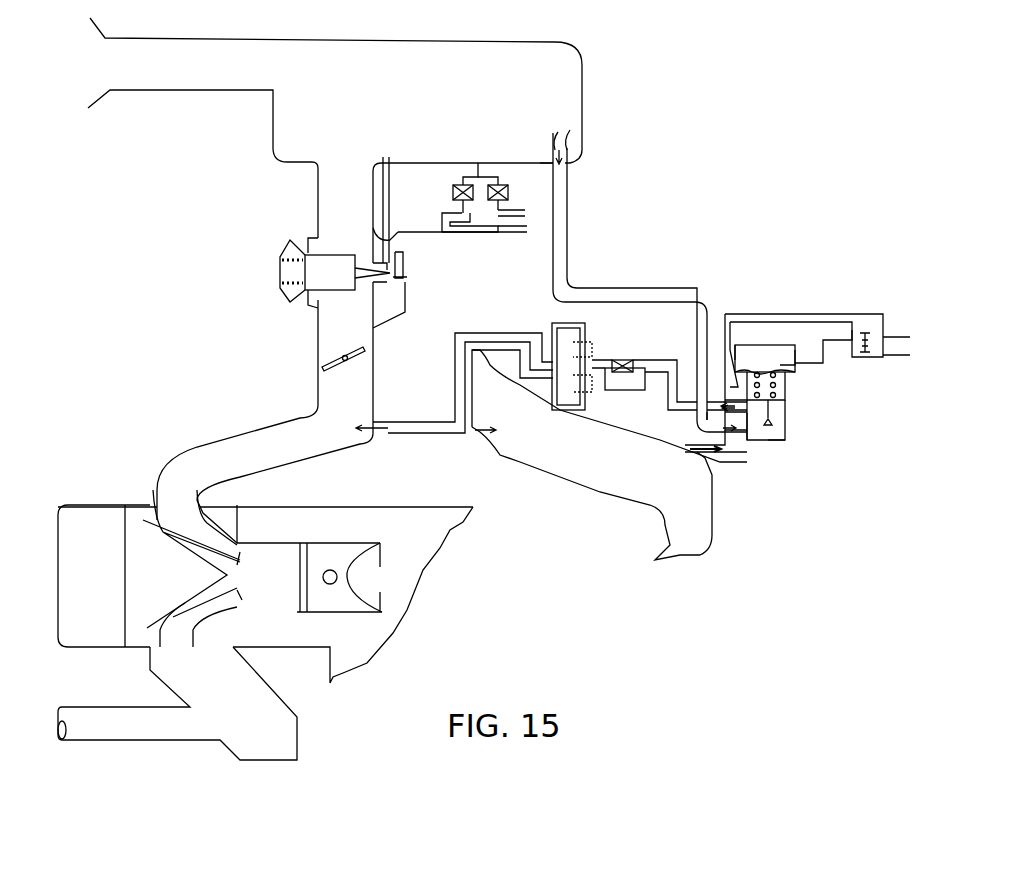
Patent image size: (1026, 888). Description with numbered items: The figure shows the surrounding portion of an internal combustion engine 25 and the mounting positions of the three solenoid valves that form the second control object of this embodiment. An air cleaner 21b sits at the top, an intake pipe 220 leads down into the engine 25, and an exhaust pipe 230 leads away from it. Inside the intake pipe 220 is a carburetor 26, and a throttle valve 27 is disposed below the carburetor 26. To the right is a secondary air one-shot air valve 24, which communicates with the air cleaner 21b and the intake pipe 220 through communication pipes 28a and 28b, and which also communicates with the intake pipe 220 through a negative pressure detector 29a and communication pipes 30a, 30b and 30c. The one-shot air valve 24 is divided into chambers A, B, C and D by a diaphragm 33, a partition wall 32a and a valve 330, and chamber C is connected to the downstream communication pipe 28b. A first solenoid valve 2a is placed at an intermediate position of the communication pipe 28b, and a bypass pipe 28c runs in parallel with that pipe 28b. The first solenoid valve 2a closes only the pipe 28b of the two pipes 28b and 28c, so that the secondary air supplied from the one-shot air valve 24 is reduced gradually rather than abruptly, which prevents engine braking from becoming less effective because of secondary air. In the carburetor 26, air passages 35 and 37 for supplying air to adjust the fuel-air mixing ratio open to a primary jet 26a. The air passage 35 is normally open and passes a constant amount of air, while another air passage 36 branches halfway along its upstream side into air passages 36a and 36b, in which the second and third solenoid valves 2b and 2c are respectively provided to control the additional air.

The air cleaner 21b is at (580, 72).
The communication pipe 28a is at (568, 198).
The communication pipe 28b is at (667, 345).
The bypass pipe 28c is at (640, 383).
The first solenoid valve 2a is at (623, 358).
The second solenoid valve 2b is at (456, 183).
The third solenoid valve 2c is at (504, 183).
The air passage 35 is at (392, 179).
The air passage 36 is at (432, 232).
The air passage 36a is at (458, 222).
The air passage 36b is at (505, 232).
The air passage 37 is at (398, 235).
The carburetor 26 is at (332, 258).
The primary jet 26a is at (396, 283).
The throttle valve 27 is at (322, 367).
The intake pipe 220 is at (228, 446).
The internal combustion engine 25 is at (379, 504).
The exhaust pipe 230 is at (128, 740).
The secondary air one-shot air valve 24 is at (747, 340).
The communication pipe 30a is at (812, 364).
The communication pipe 30b is at (830, 314).
The communication pipe 30c is at (733, 387).
The diaphragm 33 is at (775, 370).
The negative pressure detector 29a is at (882, 314).
The partition wall 32a is at (770, 403).
The valve 330 is at (770, 423).
The chamber A is at (762, 350).
The chamber B is at (788, 382).
The chamber C is at (755, 413).
The chamber D is at (767, 427).